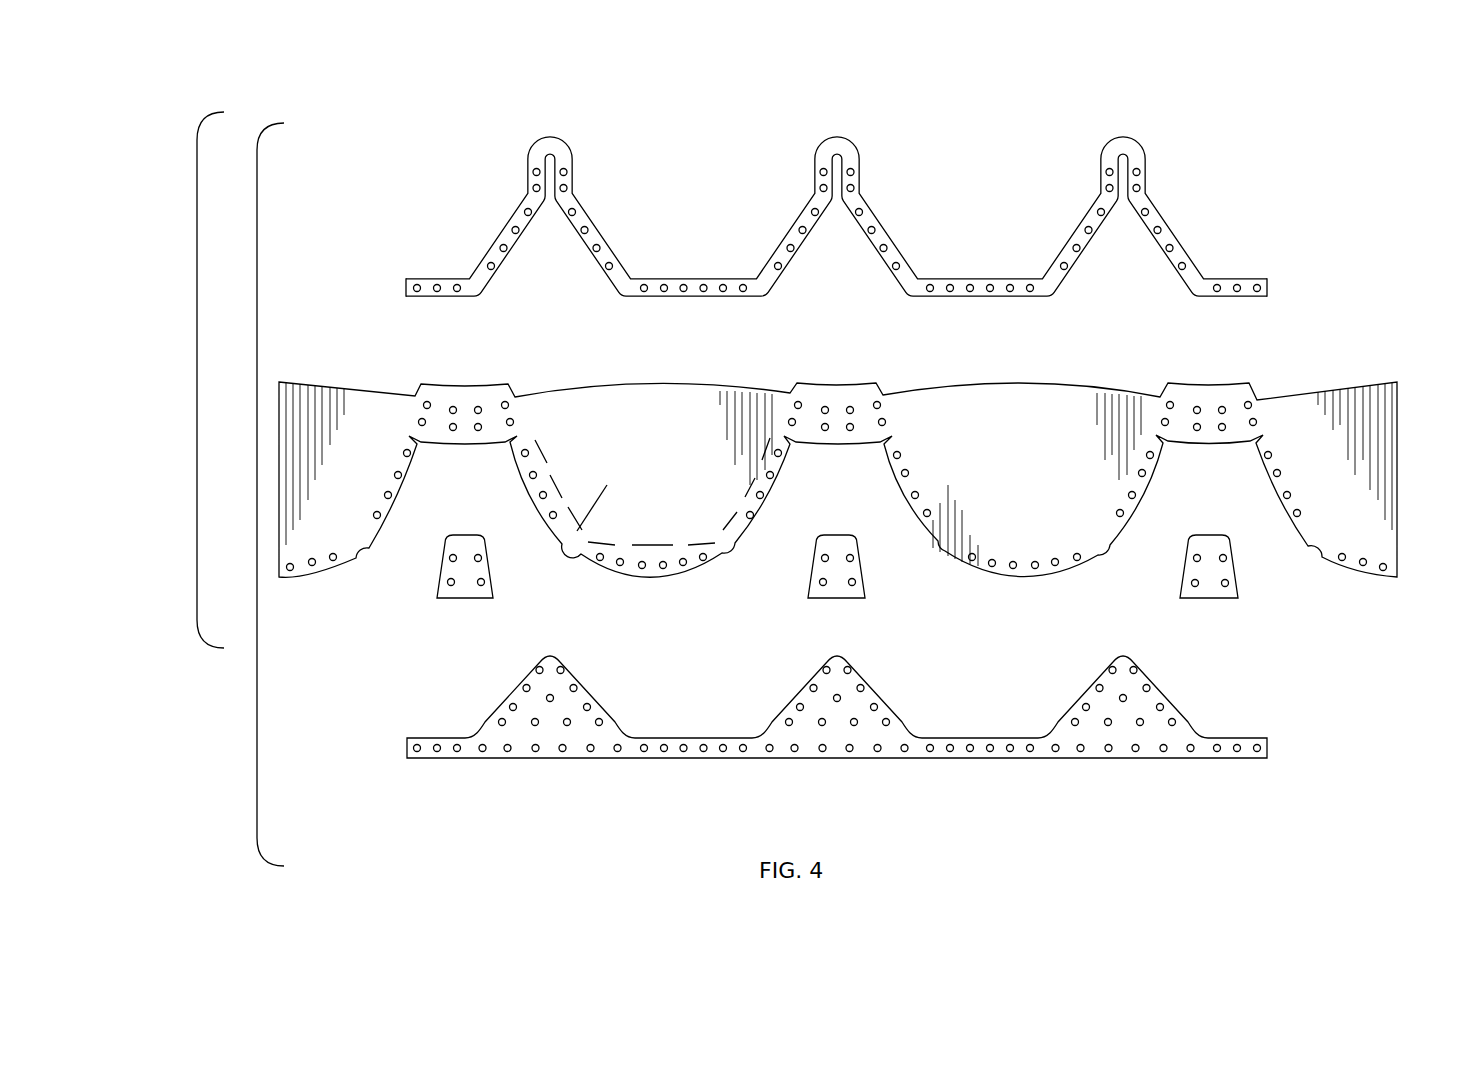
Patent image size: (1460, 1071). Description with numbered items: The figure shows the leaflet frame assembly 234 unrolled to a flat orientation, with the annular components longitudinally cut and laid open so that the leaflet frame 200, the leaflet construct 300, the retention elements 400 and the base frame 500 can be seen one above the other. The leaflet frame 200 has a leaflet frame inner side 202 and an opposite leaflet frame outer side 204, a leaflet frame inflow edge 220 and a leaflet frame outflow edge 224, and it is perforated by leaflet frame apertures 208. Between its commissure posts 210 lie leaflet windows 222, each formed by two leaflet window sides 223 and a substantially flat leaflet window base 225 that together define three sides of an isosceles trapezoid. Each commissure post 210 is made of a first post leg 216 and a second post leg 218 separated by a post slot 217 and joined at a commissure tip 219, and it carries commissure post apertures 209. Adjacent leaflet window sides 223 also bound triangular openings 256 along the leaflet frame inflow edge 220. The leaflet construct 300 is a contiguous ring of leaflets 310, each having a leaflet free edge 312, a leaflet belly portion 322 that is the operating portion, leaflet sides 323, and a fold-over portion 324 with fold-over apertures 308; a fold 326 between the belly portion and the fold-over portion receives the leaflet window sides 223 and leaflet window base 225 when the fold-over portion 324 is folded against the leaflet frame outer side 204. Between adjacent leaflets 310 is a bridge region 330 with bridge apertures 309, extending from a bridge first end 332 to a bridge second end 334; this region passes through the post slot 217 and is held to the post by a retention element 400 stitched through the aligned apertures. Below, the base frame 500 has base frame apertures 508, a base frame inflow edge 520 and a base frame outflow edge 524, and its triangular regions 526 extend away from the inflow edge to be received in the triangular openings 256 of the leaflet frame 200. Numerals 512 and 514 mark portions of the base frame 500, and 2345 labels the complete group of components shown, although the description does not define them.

The leaflet frame 200 is at (1272, 288).
The leaflet frame inner side 202 is at (1225, 258).
The leaflet frame outer side 204 is at (1192, 300).
The leaflet frame apertures 208 is at (595, 252).
The commissure post apertures 209 is at (567, 187).
The commissure post 210 is at (575, 152).
The first post leg 216 is at (815, 172).
The post slot 217 is at (837, 220).
The second post leg 218 is at (860, 165).
The commissure tip 219 is at (545, 140).
The leaflet frame inflow edge 220 is at (937, 297).
The leaflet window 222 is at (708, 128).
The leaflet window sides 223 is at (592, 215).
The leaflet frame outflow edge 224 is at (950, 282).
The leaflet window base 225 is at (645, 282).
The leaflet frame assembly 234 is at (197, 352).
The triangular openings 256 is at (1125, 238).
The leaflet construct 300 is at (1400, 405).
The fold-over apertures 308 is at (972, 562).
The bridge apertures 309 is at (888, 424).
The leaflet 310 is at (580, 410).
The leaflet free edge 312 is at (625, 387).
The leaflet belly portion 322 is at (560, 535).
The leaflet sides 323 is at (565, 460).
The fold-over portion 324 is at (745, 532).
The fold 326 is at (655, 540).
The bridge region 330 is at (783, 382).
The bridge first end 332 is at (906, 412).
The bridge second end 334 is at (766, 410).
The retention element 400 is at (437, 580).
The base frame 500 is at (1270, 752).
The base frame apertures 508 is at (700, 759).
The end portion 512 is at (453, 724).
The base segment 514 is at (500, 759).
The base frame inflow edge 520 is at (1205, 759).
The base frame outflow edge 524 is at (1210, 738).
The triangular regions 526 is at (592, 700).
The full layer stack 2345 is at (257, 755).